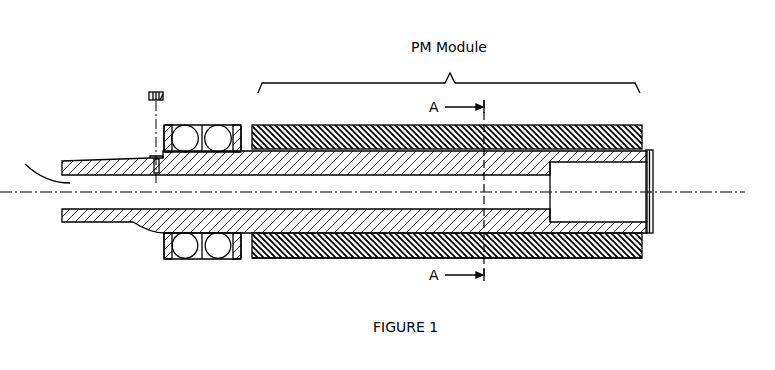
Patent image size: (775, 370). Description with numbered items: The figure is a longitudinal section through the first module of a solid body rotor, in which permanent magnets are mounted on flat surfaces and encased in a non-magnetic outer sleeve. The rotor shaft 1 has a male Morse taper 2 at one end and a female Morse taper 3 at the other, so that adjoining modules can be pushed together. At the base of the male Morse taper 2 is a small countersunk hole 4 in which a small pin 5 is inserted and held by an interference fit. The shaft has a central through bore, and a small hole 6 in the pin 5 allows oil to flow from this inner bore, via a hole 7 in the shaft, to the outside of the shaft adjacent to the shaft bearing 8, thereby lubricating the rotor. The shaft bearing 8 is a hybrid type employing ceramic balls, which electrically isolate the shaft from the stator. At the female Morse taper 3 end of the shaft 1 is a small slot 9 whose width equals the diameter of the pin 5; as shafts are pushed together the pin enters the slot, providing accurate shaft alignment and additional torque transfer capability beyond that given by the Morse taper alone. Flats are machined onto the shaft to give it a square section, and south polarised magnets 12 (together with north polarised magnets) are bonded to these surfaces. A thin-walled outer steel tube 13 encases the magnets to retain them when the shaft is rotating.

The rotor shaft 1 is at (245, 230).
The male Morse taper 2 is at (105, 222).
The female Morse taper 3 is at (608, 220).
The countersunk hole 4 is at (151, 156).
The pin 5 is at (165, 95).
The hole in the pin 6 is at (155, 91).
The hole in the shaft 7 is at (158, 170).
The shaft bearing 8 is at (214, 135).
The slot 9 is at (650, 150).
The south polarised magnets 12 is at (318, 140).
The outer steel tube 13 is at (343, 259).